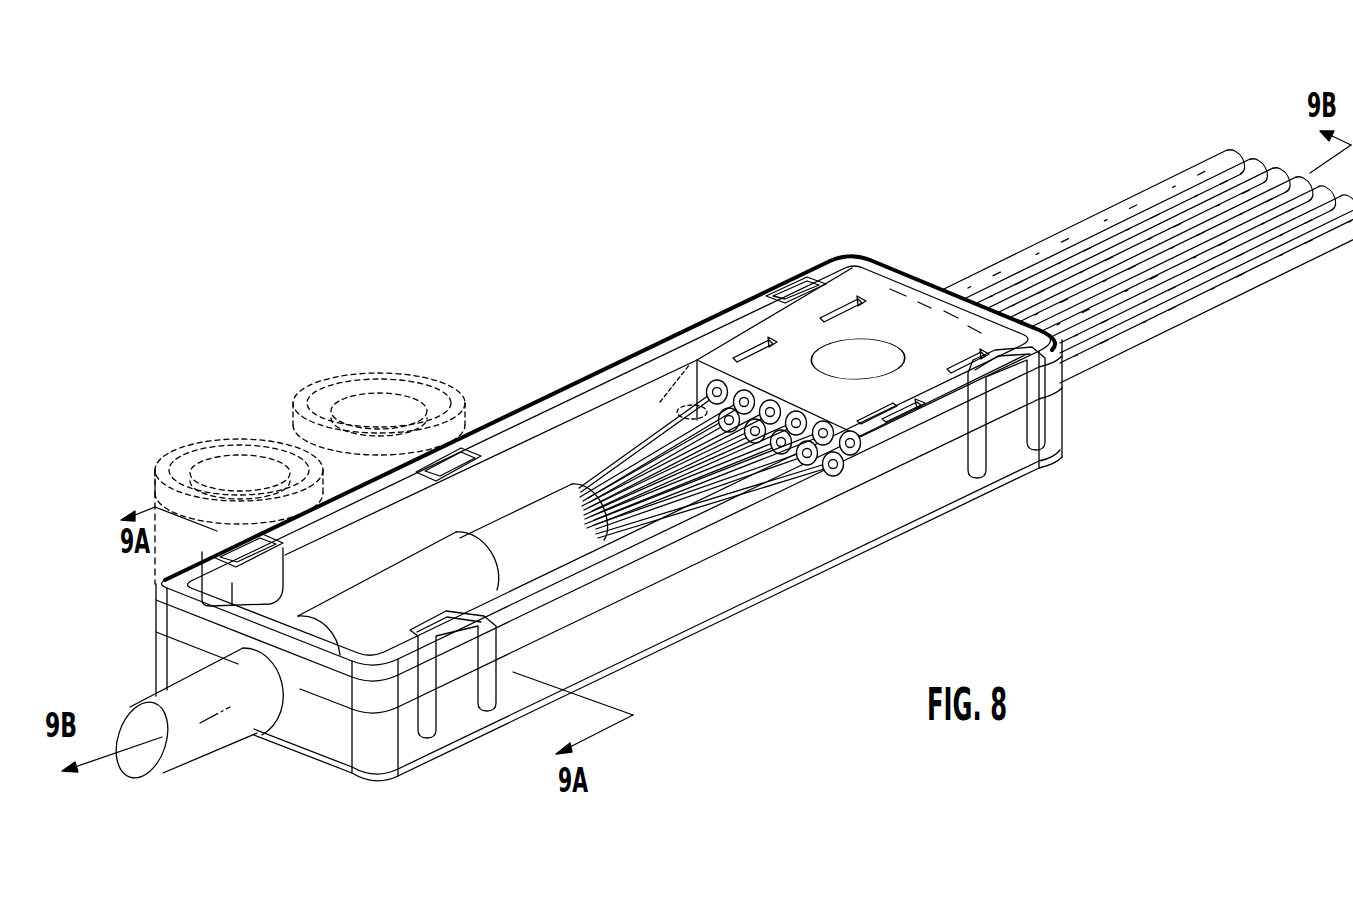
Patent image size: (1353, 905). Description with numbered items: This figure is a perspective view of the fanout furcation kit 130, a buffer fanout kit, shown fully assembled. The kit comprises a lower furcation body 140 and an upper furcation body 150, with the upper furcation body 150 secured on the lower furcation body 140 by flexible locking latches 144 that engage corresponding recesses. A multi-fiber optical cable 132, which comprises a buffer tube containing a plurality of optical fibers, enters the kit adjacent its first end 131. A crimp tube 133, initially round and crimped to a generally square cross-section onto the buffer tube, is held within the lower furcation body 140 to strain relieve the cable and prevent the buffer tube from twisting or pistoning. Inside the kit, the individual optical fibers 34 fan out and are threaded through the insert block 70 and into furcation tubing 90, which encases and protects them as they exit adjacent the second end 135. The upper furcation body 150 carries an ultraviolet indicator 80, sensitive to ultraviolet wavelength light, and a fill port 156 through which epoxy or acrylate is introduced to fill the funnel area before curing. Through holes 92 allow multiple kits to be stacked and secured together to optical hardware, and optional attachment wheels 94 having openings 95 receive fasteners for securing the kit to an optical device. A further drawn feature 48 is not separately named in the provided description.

The optical fibers 34 is at (700, 470).
The ferrule holder / connector block face 48 is at (690, 378).
The insert block 70 is at (922, 343).
The ultraviolet (UV) indicator 80 is at (850, 350).
The furcation tubing 90 is at (1240, 193).
The through holes 92 is at (443, 468).
The attachment wheels 94 is at (262, 439).
The openings 95 is at (360, 410).
The fanout furcation kit 130 is at (968, 556).
The first end 131 is at (313, 732).
The multi-fiber optical cable 132 is at (208, 755).
The crimp tube 133 is at (460, 585).
The second end 135 is at (897, 262).
The lower furcation body 140 is at (735, 620).
The flexible locking latches 144 is at (787, 287).
The upper furcation body 150 is at (600, 443).
The fill port 156 is at (650, 393).